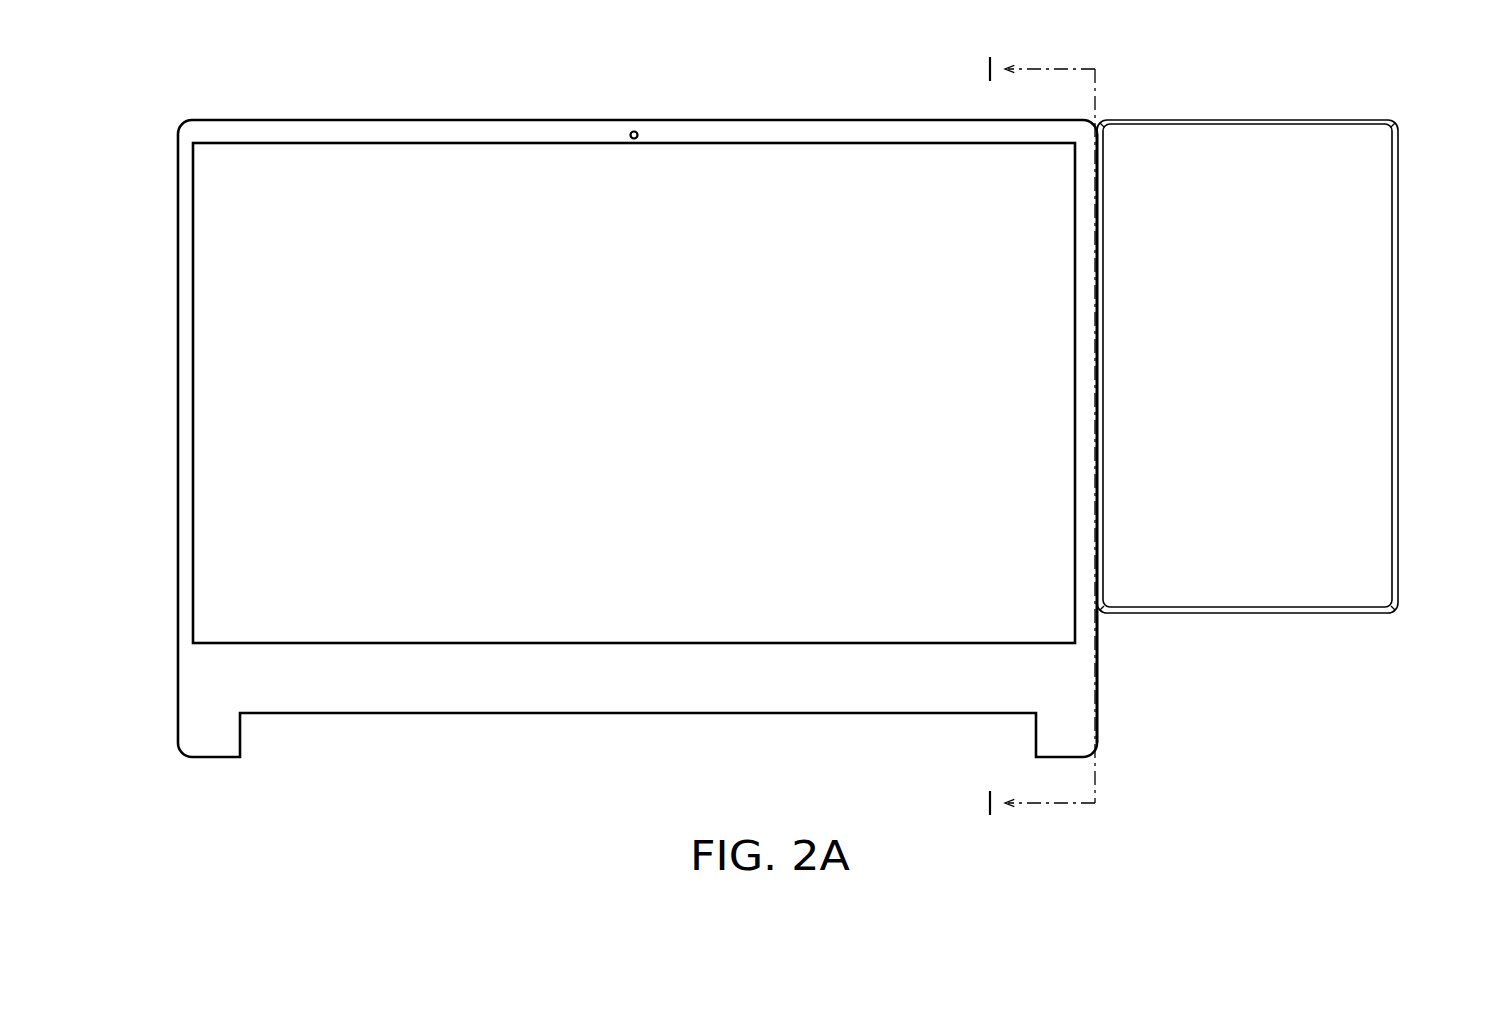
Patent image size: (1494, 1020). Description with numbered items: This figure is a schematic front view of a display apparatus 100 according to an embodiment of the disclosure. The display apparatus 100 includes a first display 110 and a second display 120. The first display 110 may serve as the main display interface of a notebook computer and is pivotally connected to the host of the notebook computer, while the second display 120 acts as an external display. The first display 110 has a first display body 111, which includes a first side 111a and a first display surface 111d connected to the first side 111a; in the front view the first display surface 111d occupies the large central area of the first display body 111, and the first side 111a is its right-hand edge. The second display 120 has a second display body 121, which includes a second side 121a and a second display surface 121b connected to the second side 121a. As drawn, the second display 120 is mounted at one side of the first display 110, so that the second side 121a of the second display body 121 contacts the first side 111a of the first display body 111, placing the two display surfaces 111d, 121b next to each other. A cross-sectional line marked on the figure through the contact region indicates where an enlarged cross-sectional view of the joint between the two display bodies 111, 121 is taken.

The display apparatus 100 is at (1432, 791).
The first display 110 is at (158, 472).
The first display body 111 is at (240, 133).
The first side 111a is at (1100, 232).
The first display surface 111d is at (698, 607).
The second display 120 is at (1413, 470).
The second display body 121 is at (1308, 122).
The second side 121a is at (1097, 190).
The second display surface 121b is at (1265, 575).